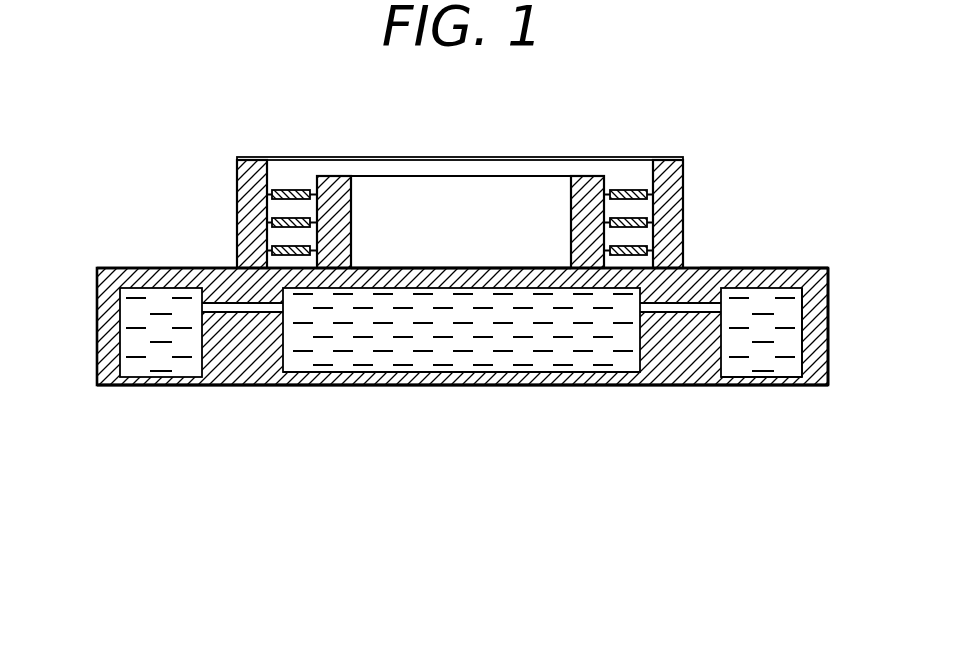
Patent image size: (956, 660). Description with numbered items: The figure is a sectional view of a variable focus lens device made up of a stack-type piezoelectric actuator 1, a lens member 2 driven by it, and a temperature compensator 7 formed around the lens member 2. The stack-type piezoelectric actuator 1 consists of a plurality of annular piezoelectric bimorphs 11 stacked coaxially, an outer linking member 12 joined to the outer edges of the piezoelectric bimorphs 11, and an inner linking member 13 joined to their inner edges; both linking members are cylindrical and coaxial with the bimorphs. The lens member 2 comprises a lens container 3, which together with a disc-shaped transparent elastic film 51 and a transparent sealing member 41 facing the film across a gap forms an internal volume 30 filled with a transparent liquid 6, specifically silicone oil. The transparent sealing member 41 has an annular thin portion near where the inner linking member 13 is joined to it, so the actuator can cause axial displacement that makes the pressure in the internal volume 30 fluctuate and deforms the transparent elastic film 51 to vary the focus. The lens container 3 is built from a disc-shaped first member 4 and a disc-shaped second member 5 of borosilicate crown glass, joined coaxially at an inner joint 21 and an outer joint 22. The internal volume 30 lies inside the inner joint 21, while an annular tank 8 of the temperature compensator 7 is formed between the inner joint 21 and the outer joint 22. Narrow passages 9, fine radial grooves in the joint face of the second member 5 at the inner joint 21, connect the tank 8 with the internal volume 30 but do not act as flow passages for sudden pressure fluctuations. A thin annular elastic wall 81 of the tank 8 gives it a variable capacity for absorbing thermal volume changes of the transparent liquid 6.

The stack-type piezoelectric actuator 1 is at (692, 187).
The lens member 2 is at (543, 393).
The lens container 3 is at (410, 386).
The first member 4 is at (829, 278).
The second member 5 is at (829, 353).
The transparent liquid 6 is at (590, 386).
The temperature compensator 7 is at (668, 452).
The tank 8 is at (772, 393).
The narrow passages 9 is at (245, 306).
The piezoelectric bimorphs 11 is at (288, 190).
The outer linking member 12 is at (237, 200).
The inner linking member 13 is at (352, 210).
The inner joint 21 is at (700, 262).
The outer joint 22 is at (808, 260).
The internal volume 30 is at (495, 340).
The transparent sealing member 41 is at (470, 268).
The transparent elastic film 51 is at (357, 377).
The annular elastic wall 81 is at (748, 386).